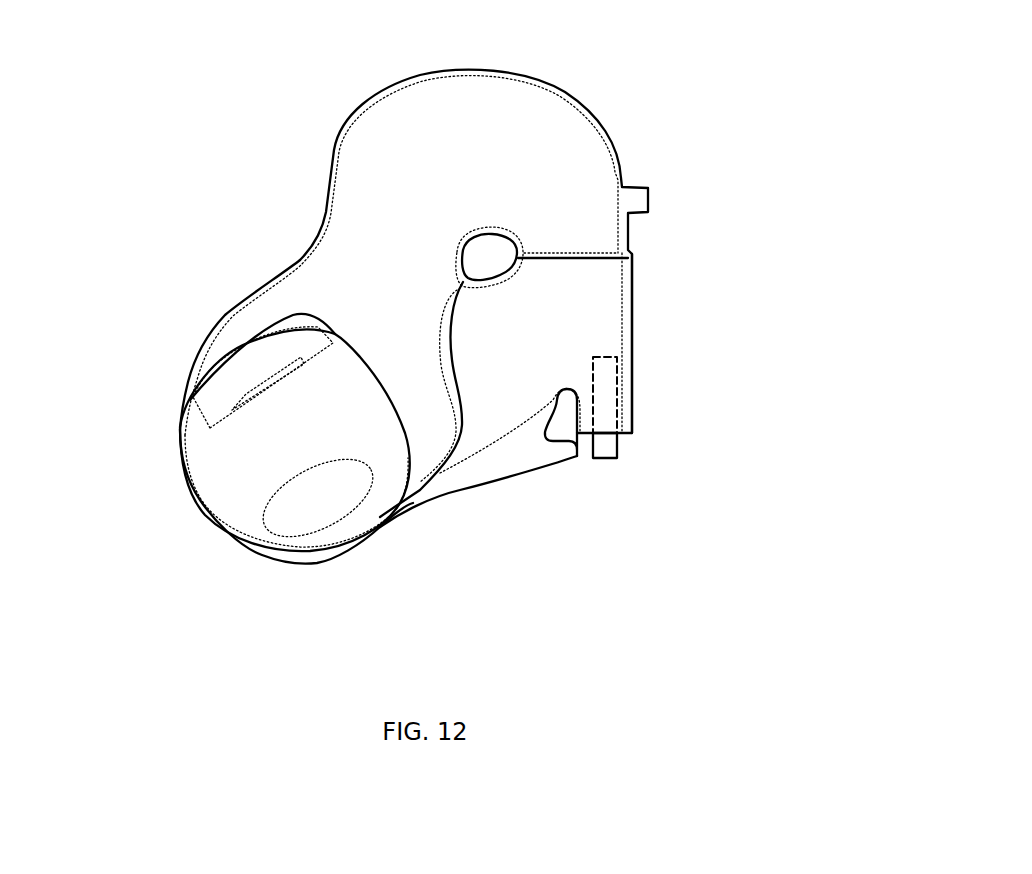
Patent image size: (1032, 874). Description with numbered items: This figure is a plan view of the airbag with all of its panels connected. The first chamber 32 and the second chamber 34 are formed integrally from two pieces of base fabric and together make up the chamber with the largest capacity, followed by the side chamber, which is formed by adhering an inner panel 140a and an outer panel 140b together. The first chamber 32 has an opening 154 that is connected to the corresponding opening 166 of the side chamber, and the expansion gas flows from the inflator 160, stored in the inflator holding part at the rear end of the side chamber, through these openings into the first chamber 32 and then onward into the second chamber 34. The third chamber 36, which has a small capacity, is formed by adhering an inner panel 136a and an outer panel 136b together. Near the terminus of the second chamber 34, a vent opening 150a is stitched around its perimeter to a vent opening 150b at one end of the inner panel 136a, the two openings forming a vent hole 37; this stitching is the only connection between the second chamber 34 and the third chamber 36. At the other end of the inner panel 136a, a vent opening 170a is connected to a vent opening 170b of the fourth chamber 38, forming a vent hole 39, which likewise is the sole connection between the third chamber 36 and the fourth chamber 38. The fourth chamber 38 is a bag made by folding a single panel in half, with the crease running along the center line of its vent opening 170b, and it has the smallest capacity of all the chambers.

The first chamber 32 is at (500, 103).
The second chamber 34 is at (287, 298).
The third chamber 36 is at (221, 493).
The vent hole 37 is at (320, 563).
The vent opening 150a is at (320, 563).
The vent opening 150b is at (312, 525).
The fourth chamber 38 is at (232, 356).
The vent hole 39 is at (191, 334).
The vent opening 170a is at (191, 334).
The vent opening 170b is at (210, 430).
The opening 154 is at (573, 192).
The opening 166 is at (592, 253).
The inner panel 140a is at (686, 343).
The outer panel 140b is at (633, 343).
The inflator 160 is at (617, 447).
The inner panel 136a is at (482, 405).
The outer panel 136b is at (405, 435).